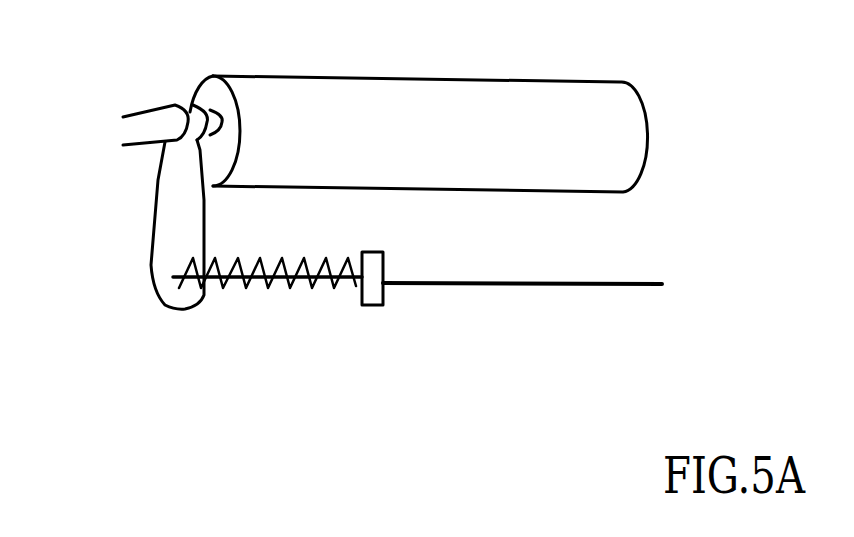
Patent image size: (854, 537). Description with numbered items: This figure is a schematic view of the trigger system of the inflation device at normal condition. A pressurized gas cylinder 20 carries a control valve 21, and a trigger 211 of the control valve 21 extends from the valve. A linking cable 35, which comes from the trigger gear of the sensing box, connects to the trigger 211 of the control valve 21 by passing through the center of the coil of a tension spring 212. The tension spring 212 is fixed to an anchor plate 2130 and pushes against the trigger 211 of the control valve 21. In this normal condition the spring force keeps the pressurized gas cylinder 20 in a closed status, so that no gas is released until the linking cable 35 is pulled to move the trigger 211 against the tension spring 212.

The pressurized gas cylinder 20 is at (593, 142).
The control valve 21 is at (175, 106).
The trigger 211 is at (178, 222).
The tension spring 212 is at (280, 292).
The anchor plate 2130 is at (365, 288).
The linking cable 35 is at (585, 288).